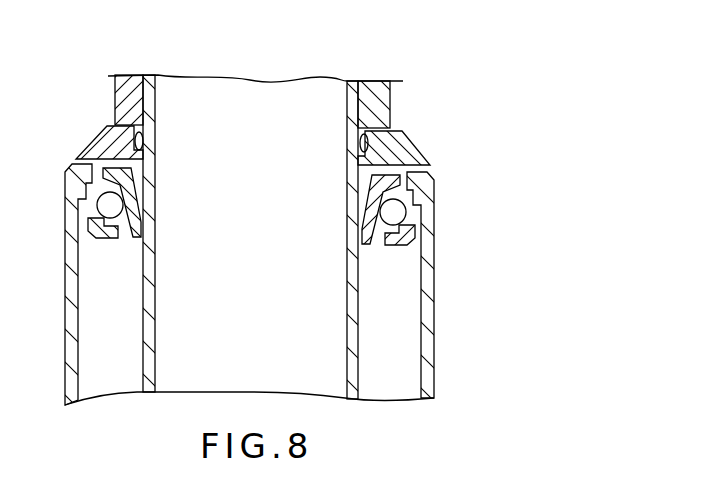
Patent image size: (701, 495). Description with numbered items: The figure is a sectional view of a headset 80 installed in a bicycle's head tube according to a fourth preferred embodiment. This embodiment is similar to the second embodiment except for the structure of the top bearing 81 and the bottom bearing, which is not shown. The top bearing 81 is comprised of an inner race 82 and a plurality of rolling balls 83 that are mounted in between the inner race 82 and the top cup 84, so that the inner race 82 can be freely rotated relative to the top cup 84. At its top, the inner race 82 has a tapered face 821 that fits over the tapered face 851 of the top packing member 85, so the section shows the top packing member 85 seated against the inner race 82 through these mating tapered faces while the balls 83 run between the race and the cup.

The headset 80 is at (487, 115).
The top packing member 85 is at (348, 165).
The tapered face of the top packing member 851 is at (286, 98).
The tapered face of the inner race 821 is at (404, 134).
The top bearing 81 is at (323, 274).
The inner race 82 is at (437, 180).
The rolling balls 83 is at (395, 212).
The top cup 84 is at (417, 240).